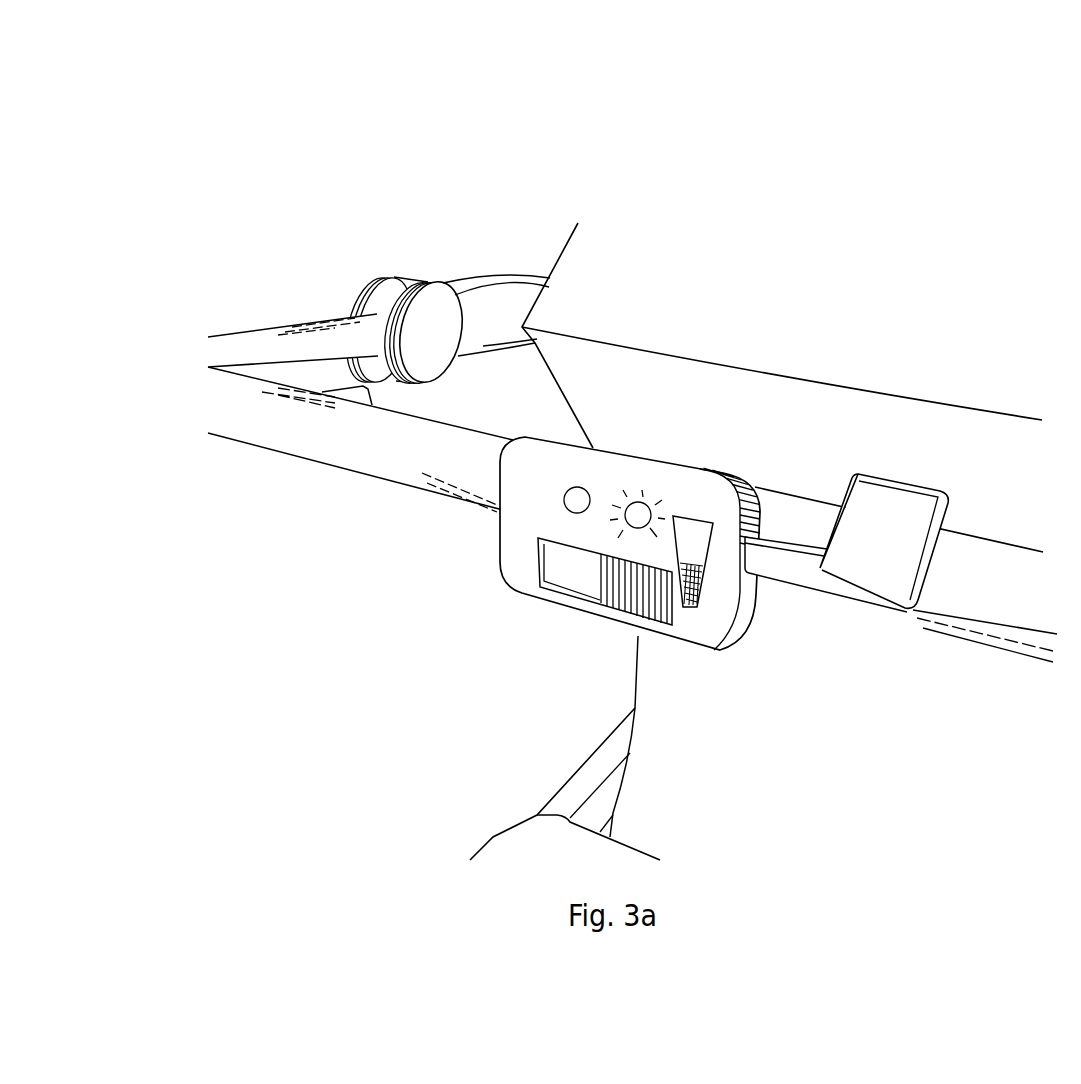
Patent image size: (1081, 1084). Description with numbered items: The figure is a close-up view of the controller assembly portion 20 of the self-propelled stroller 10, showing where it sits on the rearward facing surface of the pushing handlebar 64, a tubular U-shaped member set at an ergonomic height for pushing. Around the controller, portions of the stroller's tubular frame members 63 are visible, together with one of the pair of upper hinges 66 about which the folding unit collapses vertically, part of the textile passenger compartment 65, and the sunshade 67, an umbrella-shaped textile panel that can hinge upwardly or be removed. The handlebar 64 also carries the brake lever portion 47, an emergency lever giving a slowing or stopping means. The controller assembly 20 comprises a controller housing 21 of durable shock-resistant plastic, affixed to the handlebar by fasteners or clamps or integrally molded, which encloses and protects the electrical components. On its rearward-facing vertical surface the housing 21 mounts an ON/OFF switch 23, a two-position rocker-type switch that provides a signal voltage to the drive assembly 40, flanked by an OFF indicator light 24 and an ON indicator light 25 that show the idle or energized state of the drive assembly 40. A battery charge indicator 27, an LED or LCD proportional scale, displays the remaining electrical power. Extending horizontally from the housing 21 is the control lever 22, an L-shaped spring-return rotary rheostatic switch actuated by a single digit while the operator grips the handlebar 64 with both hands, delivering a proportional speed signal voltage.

The self-propelled stroller 10 is at (220, 226).
The controller assembly portion 20 is at (508, 606).
The controller housing 21 is at (499, 558).
The control lever 22 is at (883, 588).
The ON/OFF switch 23 is at (615, 582).
The OFF indicator light 24 is at (578, 492).
The ON indicator light 25 is at (642, 516).
The battery charge indicator 27 is at (697, 587).
The drive assembly 40 is at (512, 843).
The brake lever portion 47 is at (372, 393).
The frame members 63 is at (508, 302).
The pushing handlebar 64 is at (275, 418).
The passenger compartment 65 is at (1010, 512).
The upper hinges 66 is at (395, 282).
The sunshade 67 is at (688, 292).